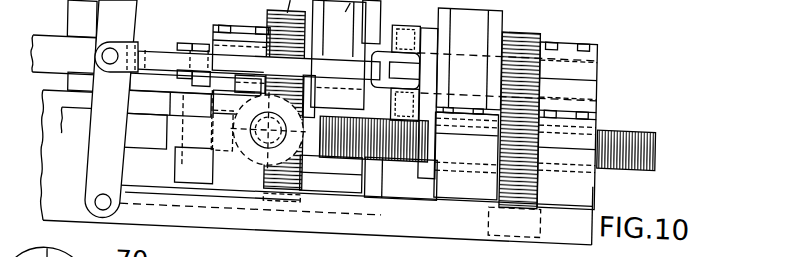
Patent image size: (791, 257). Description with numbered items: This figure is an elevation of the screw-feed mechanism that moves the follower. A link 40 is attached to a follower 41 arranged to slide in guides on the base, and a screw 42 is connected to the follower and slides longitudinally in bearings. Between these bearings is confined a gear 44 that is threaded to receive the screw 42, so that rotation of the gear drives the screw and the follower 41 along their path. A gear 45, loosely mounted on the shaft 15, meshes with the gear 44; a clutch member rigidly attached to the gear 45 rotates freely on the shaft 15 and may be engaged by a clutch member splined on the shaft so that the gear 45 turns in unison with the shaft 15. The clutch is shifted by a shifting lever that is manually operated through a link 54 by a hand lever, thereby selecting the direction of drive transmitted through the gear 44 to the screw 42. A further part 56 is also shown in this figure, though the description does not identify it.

The shaft 15 is at (60, 45).
The link 40 is at (86, 129).
The follower 41 is at (228, 160).
The screw 42 is at (630, 102).
The gear 44 is at (533, 126).
The gear 45 is at (518, 10).
The link 54 is at (331, 52).
The bearing housing 56 is at (467, 0).